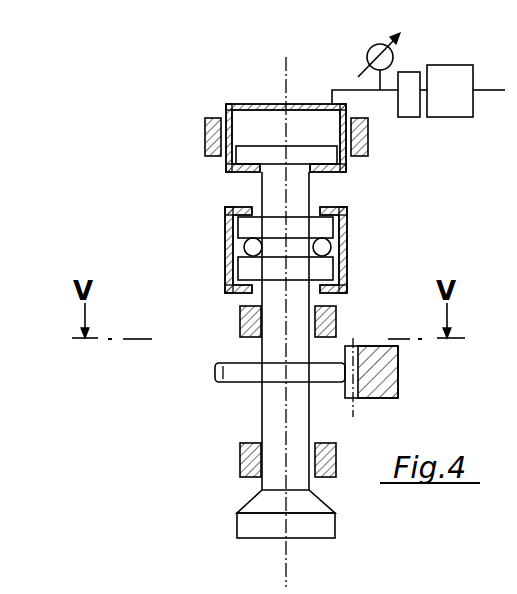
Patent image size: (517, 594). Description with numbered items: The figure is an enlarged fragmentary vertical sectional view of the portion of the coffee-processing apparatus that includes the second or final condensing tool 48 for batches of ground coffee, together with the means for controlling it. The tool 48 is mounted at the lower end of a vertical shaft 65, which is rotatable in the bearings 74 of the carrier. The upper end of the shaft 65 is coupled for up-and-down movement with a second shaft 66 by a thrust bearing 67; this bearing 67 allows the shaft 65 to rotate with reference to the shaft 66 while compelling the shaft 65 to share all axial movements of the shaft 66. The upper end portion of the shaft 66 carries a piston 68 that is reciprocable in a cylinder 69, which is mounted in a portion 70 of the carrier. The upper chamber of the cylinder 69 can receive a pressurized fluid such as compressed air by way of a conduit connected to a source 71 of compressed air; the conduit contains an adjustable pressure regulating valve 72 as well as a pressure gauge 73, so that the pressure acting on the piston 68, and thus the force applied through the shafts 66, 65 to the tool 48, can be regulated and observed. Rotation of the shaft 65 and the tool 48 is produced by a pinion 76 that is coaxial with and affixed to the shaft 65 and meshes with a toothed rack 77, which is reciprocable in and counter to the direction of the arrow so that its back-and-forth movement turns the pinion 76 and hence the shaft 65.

The second condensing tool 48 is at (310, 532).
The vertical shaft 65 is at (280, 423).
The second shaft 66 is at (273, 182).
The thrust bearing 67 is at (347, 250).
The piston 68 is at (300, 157).
The cylinder 69 is at (250, 123).
The portion of the carrier 70 is at (204, 132).
The source of compressed air 71 is at (452, 85).
The adjustable pressure regulating valve 72 is at (408, 82).
The pressure gauge 73 is at (368, 53).
The bearings 74 is at (240, 320).
The pinion 76 is at (240, 370).
The toothed rack 77 is at (390, 380).